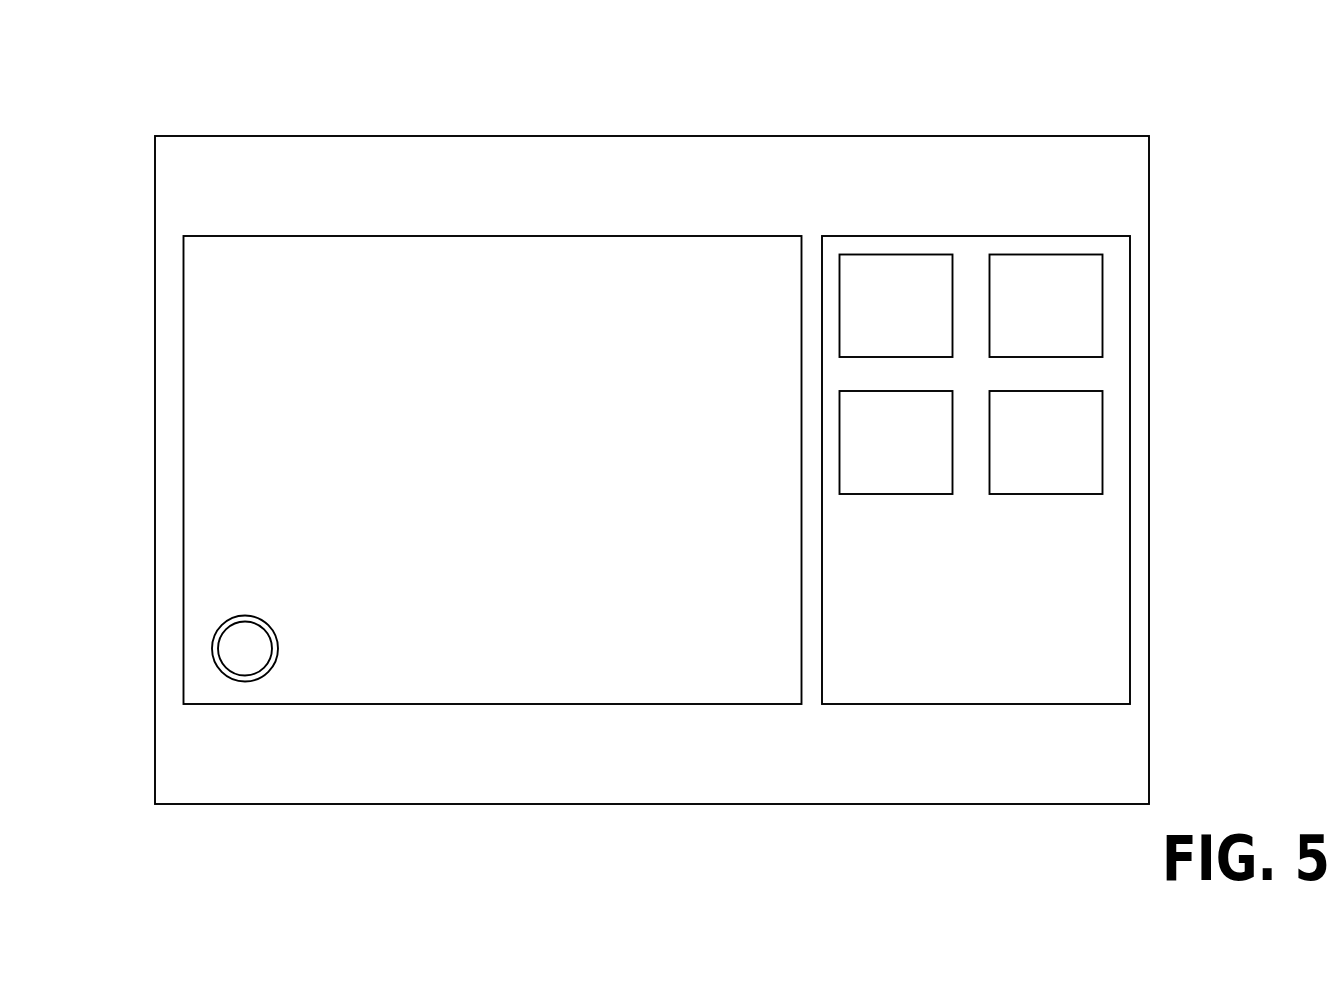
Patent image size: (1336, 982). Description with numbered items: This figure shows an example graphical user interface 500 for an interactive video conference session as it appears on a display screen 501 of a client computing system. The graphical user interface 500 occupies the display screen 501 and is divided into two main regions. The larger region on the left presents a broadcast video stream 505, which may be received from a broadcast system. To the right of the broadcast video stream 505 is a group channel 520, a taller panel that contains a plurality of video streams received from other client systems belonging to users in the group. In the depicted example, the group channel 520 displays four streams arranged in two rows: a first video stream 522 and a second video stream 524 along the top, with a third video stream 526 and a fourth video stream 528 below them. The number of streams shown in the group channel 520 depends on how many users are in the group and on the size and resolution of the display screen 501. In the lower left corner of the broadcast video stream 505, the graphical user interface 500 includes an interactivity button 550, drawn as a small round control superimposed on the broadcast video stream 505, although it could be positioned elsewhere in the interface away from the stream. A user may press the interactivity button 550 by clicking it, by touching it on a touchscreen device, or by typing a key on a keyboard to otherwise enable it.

The graphical user interface 500 is at (1232, 66).
The display screen 501 is at (873, 165).
The broadcast video stream 505 is at (221, 333).
The group channel 520 is at (1120, 250).
The first video stream 522 is at (896, 272).
The second video stream 524 is at (1037, 270).
The third video stream 526 is at (917, 478).
The fourth video stream 528 is at (1083, 447).
The interactivity button 550 is at (216, 641).